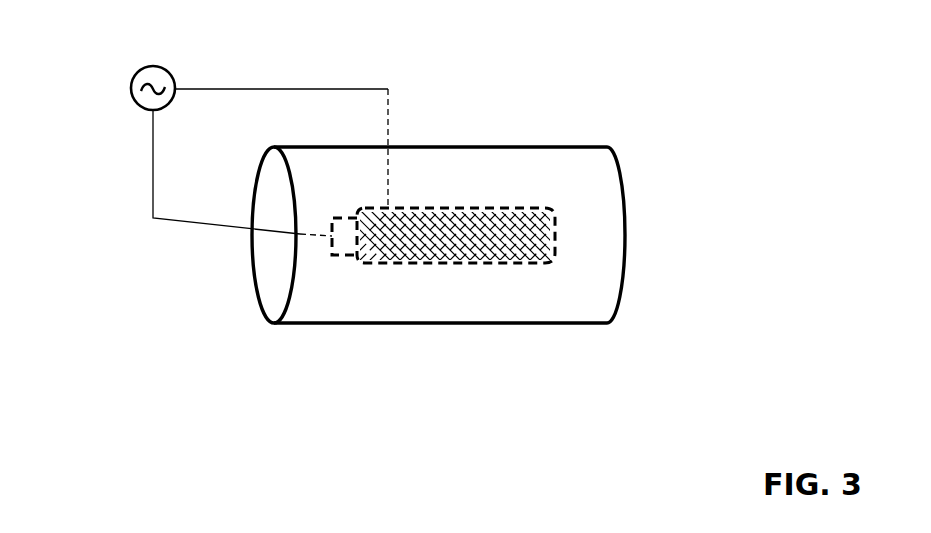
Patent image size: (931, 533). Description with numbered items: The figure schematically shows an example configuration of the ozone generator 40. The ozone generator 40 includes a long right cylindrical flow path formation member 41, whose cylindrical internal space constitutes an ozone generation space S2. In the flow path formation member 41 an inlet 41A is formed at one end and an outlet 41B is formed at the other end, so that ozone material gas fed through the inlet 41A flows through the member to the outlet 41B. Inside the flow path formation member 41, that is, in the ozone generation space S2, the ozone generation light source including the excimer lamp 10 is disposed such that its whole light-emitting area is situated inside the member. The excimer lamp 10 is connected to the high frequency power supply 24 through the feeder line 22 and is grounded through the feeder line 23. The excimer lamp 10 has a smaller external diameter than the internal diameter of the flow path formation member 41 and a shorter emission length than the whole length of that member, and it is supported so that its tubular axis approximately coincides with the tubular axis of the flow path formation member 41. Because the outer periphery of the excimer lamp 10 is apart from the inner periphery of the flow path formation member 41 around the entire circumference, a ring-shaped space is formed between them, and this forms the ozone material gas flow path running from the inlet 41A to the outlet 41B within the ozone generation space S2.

The excimer lamp 10 is at (442, 205).
The feeder line 22 is at (260, 88).
The feeder line 23 is at (204, 226).
The high frequency power supply 24 is at (130, 78).
The ozone generator 40 is at (682, 68).
The flow path formation member 41 is at (433, 213).
The inlet 41A is at (275, 282).
The outlet 41B is at (628, 248).
The ozone generation space S2 is at (523, 285).